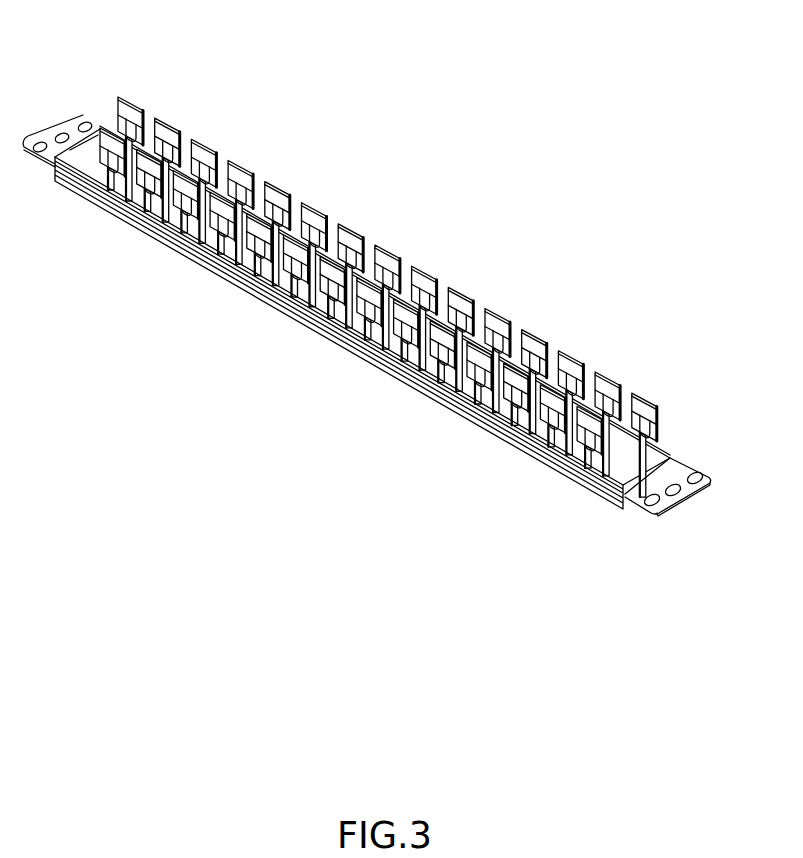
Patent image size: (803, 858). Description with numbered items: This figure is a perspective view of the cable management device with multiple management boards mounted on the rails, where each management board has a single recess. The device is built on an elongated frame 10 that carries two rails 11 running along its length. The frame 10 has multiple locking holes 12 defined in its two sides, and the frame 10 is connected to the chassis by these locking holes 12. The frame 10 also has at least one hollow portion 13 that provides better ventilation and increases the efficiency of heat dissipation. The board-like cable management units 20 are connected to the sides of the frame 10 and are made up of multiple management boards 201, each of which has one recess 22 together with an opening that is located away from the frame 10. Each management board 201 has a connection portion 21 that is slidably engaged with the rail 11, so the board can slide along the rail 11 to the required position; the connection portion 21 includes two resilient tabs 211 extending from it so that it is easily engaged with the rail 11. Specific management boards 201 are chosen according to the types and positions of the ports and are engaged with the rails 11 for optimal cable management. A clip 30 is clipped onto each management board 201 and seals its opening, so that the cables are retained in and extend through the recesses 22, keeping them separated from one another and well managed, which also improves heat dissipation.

The frame 10 is at (637, 498).
The rail 11 is at (340, 343).
The locking hole 12 is at (673, 494).
The hollow portion 13 is at (650, 473).
The cable management unit 20 is at (357, 254).
The management board 201 is at (120, 175).
The connection portion 21 is at (457, 425).
The resilient tab 211 is at (512, 406).
The recess 22 is at (257, 247).
The clip 30 is at (282, 185).